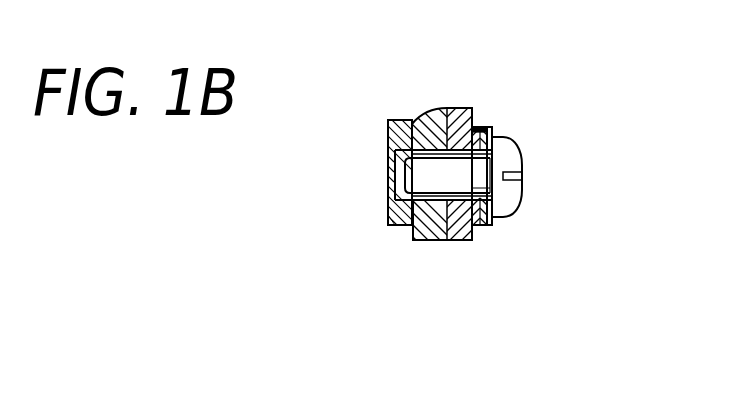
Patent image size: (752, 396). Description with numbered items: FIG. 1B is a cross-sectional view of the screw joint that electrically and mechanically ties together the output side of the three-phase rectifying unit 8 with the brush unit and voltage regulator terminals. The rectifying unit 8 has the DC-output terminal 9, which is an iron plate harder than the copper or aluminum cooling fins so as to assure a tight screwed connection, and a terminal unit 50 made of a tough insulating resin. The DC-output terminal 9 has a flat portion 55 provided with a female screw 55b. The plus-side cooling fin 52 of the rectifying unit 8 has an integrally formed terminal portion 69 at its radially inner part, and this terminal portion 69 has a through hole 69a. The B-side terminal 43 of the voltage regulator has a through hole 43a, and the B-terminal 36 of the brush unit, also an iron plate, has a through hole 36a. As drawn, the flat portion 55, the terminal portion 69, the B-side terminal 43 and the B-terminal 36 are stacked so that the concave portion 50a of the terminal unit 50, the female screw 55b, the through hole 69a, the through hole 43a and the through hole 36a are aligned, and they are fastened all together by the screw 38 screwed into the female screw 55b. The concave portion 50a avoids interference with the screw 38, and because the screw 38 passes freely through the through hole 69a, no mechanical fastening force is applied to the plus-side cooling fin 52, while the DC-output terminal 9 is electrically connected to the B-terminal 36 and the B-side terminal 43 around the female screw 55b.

The three-phase rectifying unit 8 is at (384, 238).
The DC-output terminal 9 is at (439, 248).
The terminal unit 50 is at (388, 120).
The concave portion 50a is at (389, 204).
The flat portion 55 is at (428, 240).
The female screw 55b is at (394, 163).
The plus-side cooling fin 52 is at (473, 128).
The B-side terminal 43 is at (482, 130).
The through hole 43a is at (489, 189).
The B-terminal 36 is at (491, 132).
The through hole 36a is at (497, 164).
The screw 38 is at (513, 159).
The terminal portion 69 is at (465, 245).
The through hole 69a is at (479, 193).